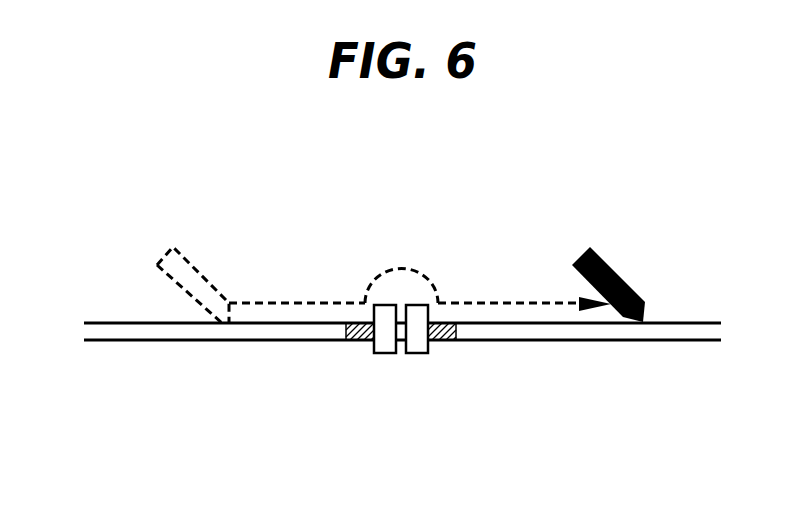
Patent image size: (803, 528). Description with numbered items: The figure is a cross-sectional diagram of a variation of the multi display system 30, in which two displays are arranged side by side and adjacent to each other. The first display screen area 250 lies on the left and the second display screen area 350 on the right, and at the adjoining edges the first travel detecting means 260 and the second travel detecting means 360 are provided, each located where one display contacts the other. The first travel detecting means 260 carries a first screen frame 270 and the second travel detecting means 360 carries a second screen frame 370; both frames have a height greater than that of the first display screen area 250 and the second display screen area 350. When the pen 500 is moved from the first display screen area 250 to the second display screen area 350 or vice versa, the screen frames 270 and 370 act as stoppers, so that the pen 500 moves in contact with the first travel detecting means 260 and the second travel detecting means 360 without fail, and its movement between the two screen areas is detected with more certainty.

The multi display system 30 is at (485, 163).
The first display screen area 250 is at (159, 340).
The first travel detecting means 260 is at (359, 340).
The first screen frame 270 is at (384, 353).
The second display screen area 350 is at (602, 340).
The second travel detecting means 360 is at (434, 340).
The second screen frame 370 is at (415, 353).
The pen 500 is at (618, 273).